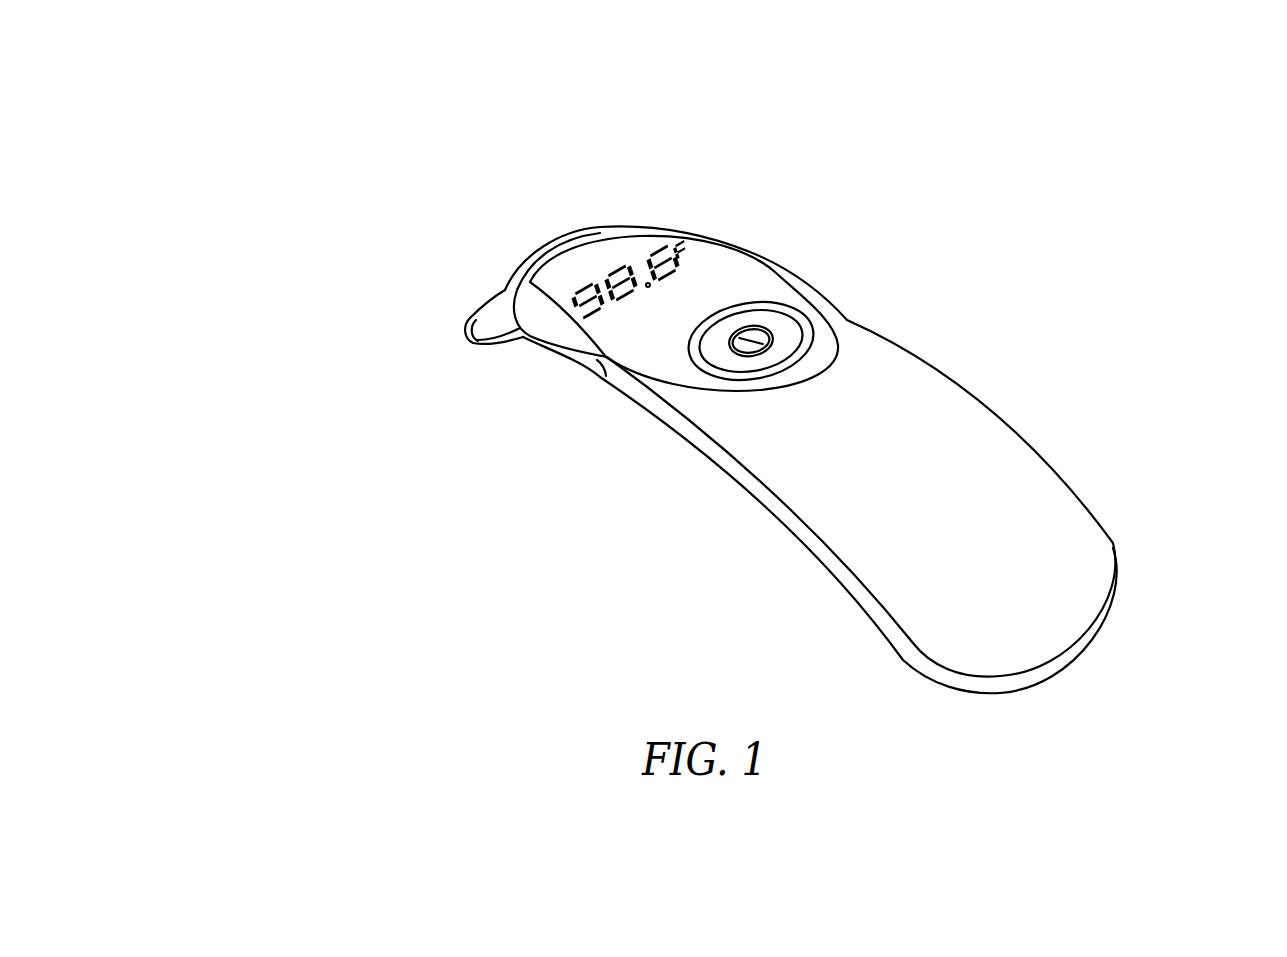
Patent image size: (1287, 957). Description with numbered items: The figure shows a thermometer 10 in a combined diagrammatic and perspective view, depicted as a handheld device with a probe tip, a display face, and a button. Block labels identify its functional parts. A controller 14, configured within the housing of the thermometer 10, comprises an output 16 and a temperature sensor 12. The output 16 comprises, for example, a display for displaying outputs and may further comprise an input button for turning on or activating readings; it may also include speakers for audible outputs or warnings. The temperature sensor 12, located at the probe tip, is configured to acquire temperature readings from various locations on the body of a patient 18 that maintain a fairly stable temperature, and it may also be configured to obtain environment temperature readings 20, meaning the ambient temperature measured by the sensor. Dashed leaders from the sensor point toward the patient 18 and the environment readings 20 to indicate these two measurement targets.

The thermometer 10 is at (866, 255).
The temperature sensor 12 is at (483, 315).
The controller 14 is at (943, 445).
The output 16 is at (693, 253).
The patient 18 is at (483, 350).
The environment temperature readings 20 is at (468, 338).